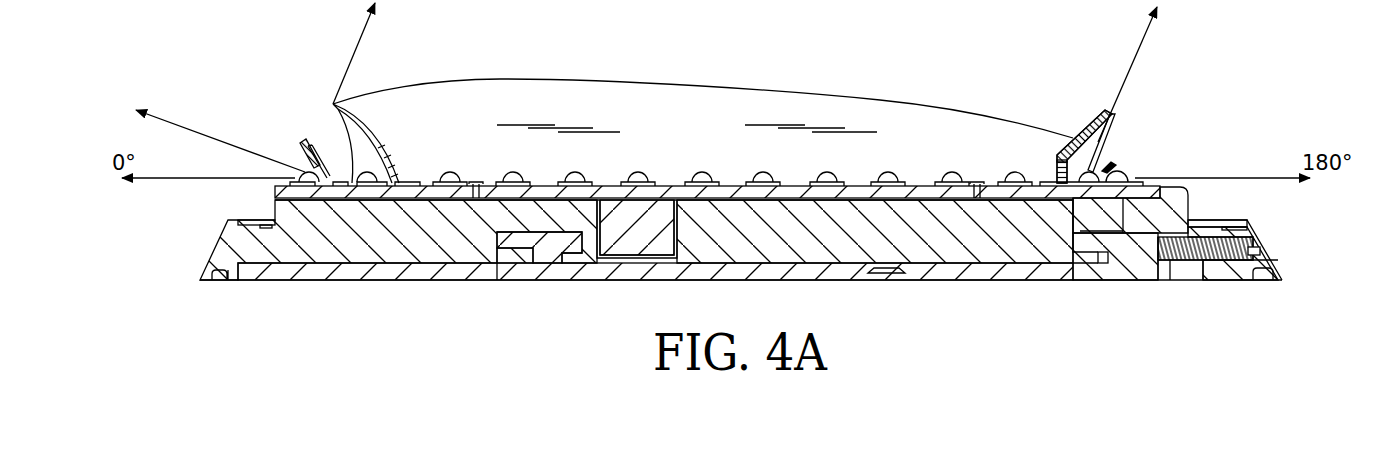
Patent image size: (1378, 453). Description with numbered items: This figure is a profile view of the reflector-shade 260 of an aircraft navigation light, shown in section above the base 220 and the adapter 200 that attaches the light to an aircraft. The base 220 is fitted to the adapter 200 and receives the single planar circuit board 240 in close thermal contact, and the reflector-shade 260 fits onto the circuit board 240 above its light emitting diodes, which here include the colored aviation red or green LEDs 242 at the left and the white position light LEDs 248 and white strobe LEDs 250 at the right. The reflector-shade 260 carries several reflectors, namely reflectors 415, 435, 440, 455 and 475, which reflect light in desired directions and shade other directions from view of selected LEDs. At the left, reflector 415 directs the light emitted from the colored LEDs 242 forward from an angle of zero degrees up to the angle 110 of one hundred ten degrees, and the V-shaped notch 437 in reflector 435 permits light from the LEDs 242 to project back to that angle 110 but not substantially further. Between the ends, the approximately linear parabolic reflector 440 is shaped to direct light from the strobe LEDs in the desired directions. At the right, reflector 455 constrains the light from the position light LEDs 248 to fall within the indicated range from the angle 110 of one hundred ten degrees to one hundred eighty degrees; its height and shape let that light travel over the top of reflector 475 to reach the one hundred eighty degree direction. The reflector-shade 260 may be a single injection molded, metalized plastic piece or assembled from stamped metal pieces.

The 110 degree angle 110 is at (771, 71).
The adapter 200 is at (1029, 287).
The base 220 is at (1238, 287).
The circuit board 240 is at (726, 180).
The colored LEDs 242 is at (300, 172).
The white position light LEDs 248 is at (1104, 160).
The white strobe LEDs 250 is at (1127, 173).
The reflector-shade 260 is at (884, 93).
The reflector 415 is at (305, 141).
The reflector 435 is at (368, 117).
The V-shaped notch 437 is at (387, 139).
The reflector 440 is at (688, 108).
The reflector 455 is at (1092, 124).
The reflector 475 is at (1119, 166).